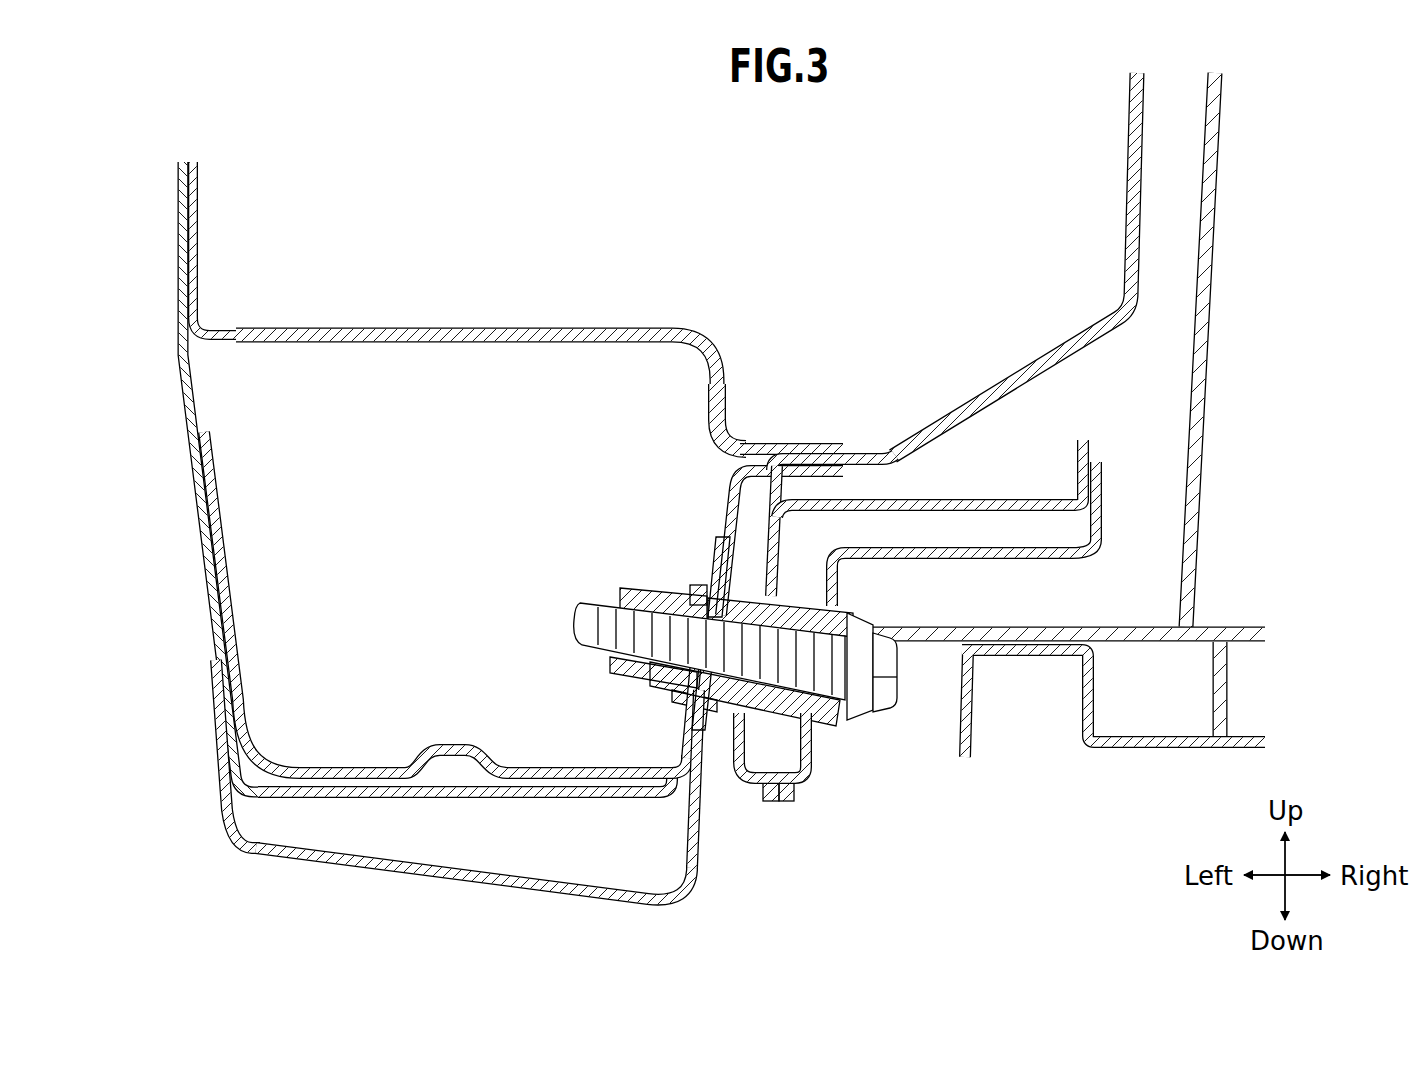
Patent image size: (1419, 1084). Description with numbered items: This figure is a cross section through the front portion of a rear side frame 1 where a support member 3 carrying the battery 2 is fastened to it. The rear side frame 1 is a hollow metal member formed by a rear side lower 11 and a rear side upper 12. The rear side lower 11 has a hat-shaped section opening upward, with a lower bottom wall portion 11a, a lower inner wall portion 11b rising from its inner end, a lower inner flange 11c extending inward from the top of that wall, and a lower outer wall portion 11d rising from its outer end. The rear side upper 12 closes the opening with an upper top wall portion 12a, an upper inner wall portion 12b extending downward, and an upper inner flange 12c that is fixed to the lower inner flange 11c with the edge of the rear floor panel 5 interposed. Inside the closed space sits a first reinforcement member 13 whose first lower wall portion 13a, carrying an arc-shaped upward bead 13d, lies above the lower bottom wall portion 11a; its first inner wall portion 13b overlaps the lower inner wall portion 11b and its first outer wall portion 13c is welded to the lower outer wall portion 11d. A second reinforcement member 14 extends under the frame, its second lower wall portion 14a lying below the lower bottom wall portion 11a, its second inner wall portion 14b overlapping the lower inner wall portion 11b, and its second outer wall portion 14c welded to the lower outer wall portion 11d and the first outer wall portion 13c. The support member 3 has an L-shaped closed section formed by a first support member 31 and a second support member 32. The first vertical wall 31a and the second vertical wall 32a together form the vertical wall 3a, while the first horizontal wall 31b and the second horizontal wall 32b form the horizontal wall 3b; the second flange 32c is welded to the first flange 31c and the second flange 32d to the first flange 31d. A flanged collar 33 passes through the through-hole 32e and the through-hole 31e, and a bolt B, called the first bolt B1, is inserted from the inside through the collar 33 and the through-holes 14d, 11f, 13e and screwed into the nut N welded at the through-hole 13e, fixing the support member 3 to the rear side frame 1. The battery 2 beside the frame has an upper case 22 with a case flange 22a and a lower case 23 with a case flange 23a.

The rear side frame 1 is at (358, 278).
The battery 2 is at (1115, 765).
The support member 3 is at (878, 485).
The vertical wall 3a is at (737, 483).
The horizontal wall 3b is at (930, 414).
The rear floor panel 5 is at (797, 458).
The rear side lower 11 is at (305, 806).
The lower bottom wall portion 11a is at (357, 795).
The lower inner wall portion 11b is at (712, 740).
The lower inner flange 11c is at (778, 469).
The lower outer wall portion 11d is at (190, 497).
The through-hole 11f is at (673, 707).
The rear side upper 12 is at (526, 305).
The upper top wall portion 12a is at (445, 328).
The upper inner wall portion 12b is at (722, 352).
The upper inner flange 12c is at (820, 446).
The first reinforcement member 13 is at (238, 848).
The first lower wall portion 13a is at (560, 775).
The first inner wall portion 13b is at (717, 797).
The first outer wall portion 13c is at (203, 566).
The bead 13d is at (457, 754).
The through-hole 13e is at (683, 596).
The second reinforcement member 14 is at (640, 911).
The second lower wall portion 14a is at (610, 900).
The second inner wall portion 14b is at (697, 845).
The second outer wall portion 14c is at (214, 706).
The through-hole 14d is at (660, 684).
The upper case 22 is at (1238, 634).
The case flange 22a is at (1130, 634).
The lower case 23 is at (1162, 745).
The case flange 23a is at (1010, 652).
The first support member 31 is at (948, 535).
The first vertical wall 31a is at (808, 735).
The first horizontal wall 31b is at (975, 556).
The first flange 31c is at (1103, 500).
The first flange 31d is at (790, 803).
The through-hole 31e is at (842, 612).
The second support member 32 is at (1007, 478).
The second vertical wall 32a is at (703, 524).
The second horizontal wall 32b is at (882, 499).
The second flange 32c is at (1078, 455).
The second flange 32d is at (760, 790).
The through-hole 32e is at (795, 790).
The flanged collar 33 is at (716, 553).
The bolt B is at (673, 654).
The first bolt B1 is at (582, 623).
The nut N is at (627, 593).